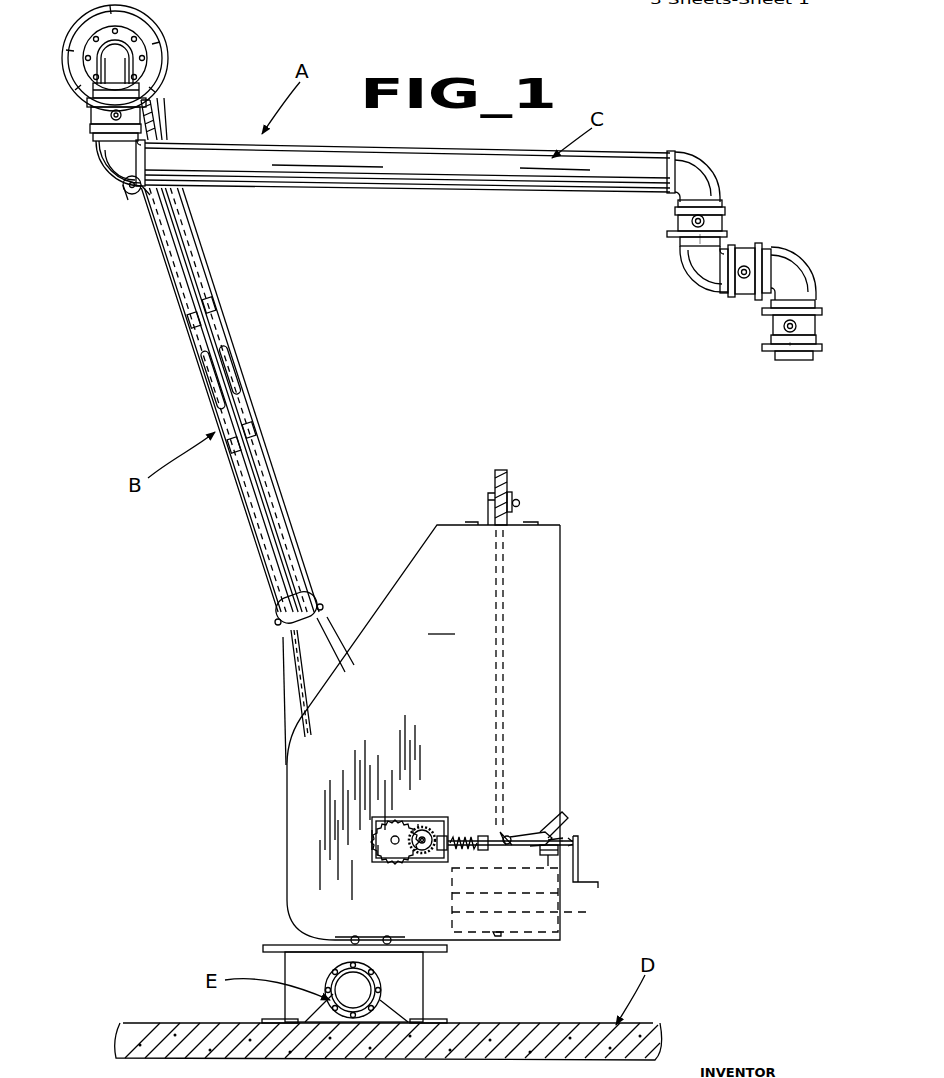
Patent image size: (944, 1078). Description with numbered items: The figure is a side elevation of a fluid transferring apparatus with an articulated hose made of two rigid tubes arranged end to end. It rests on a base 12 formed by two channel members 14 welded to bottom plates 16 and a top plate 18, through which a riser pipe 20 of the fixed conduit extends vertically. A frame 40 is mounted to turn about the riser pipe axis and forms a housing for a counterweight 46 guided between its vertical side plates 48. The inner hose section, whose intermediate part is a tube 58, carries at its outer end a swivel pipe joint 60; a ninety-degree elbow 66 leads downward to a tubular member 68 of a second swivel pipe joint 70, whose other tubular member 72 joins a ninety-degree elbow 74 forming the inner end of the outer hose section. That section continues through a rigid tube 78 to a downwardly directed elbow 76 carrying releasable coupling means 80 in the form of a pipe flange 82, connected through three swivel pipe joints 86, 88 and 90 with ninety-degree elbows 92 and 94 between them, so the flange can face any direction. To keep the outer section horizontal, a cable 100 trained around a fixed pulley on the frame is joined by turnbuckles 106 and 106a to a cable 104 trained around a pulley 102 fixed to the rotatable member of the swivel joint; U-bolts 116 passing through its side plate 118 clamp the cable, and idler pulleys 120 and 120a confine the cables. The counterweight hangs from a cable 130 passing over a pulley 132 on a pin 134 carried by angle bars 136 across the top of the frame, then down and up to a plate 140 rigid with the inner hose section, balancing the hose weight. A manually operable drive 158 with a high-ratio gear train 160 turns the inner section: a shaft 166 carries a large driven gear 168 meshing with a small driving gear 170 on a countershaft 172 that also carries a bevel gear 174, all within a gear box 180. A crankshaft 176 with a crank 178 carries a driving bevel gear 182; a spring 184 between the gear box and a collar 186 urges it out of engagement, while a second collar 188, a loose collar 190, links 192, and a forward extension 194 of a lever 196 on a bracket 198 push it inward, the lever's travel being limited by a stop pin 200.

The base 12 is at (284, 968).
The channel members 14 is at (408, 975).
The bottom plates 16 is at (273, 1020).
The top plate 18 is at (300, 945).
The riser pipe 20 is at (338, 940).
The frame 40 is at (562, 670).
The counterweight 46 is at (535, 902).
The side plates 48 is at (387, 755).
The tube 58 is at (258, 488).
The swivel pipe joint 60 is at (142, 67).
The elbow 66 is at (115, 58).
The tubular member 68 is at (124, 101).
The swivel pipe joint 70 is at (155, 112).
The tubular member 72 is at (117, 143).
The elbow 74 is at (126, 158).
The elbow 76 is at (696, 178).
The rigid tube 78 is at (462, 165).
The releasable coupling means 80 is at (742, 306).
The pipe flange 82 is at (798, 360).
The swivel pipe joint 86 is at (674, 221).
The swivel pipe joint 88 is at (753, 240).
The swivel pipe joint 90 is at (768, 330).
The elbow 92 is at (700, 266).
The elbow 94 is at (786, 277).
The cable 100 is at (298, 678).
The pulley 102 is at (122, 90).
The cable 104 is at (162, 135).
The turnbuckle 106 is at (210, 378).
The turnbuckle 106a is at (236, 361).
The U-bolts 116 is at (150, 26).
The side plate 118 is at (135, 13).
The idler pulley 120 is at (124, 193).
The idler pulley 120a is at (352, 586).
The cable 130 is at (509, 474).
The pulley 132 is at (510, 490).
The pin 134 is at (518, 503).
The angle bars 136 is at (478, 525).
The plate 140 is at (297, 718).
The manually operable drive 158 is at (572, 833).
The gear train 160 is at (388, 822).
The shaft 166 is at (396, 845).
The driven gear 168 is at (380, 850).
The driving gear 170 is at (428, 852).
The countershaft 172 is at (422, 845).
The bevel gear 174 is at (419, 826).
The crankshaft 176 is at (492, 848).
The crank 178 is at (580, 855).
The gear box 180 is at (373, 833).
The driving bevel gear 182 is at (440, 836).
The spring 184 is at (480, 850).
The collar 186 is at (462, 838).
The second collar 188 is at (504, 834).
The collar 190 is at (510, 837).
The links 192 is at (520, 838).
The forward extension 194 is at (532, 838).
The lever 196 is at (544, 836).
The bracket 198 is at (552, 858).
The stop pin 200 is at (541, 856).